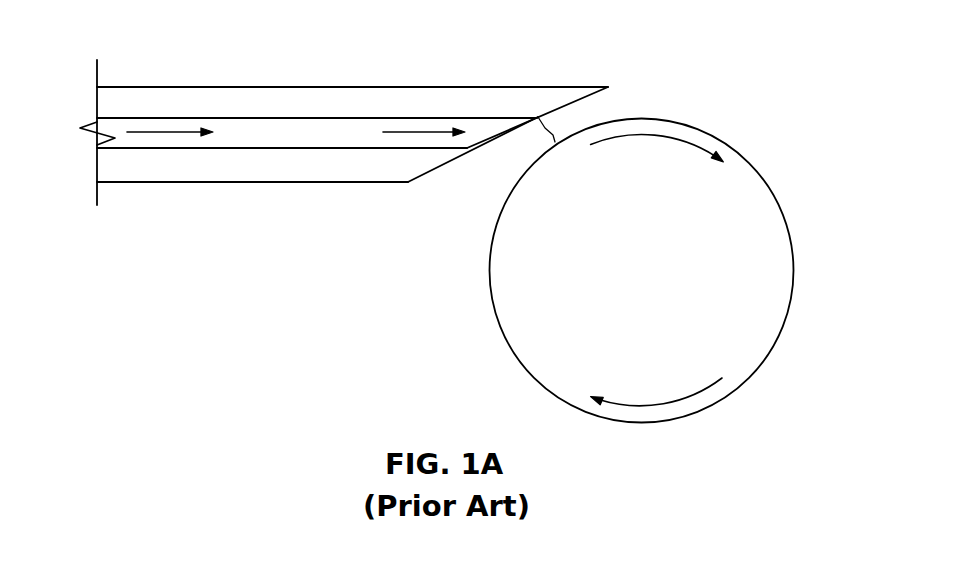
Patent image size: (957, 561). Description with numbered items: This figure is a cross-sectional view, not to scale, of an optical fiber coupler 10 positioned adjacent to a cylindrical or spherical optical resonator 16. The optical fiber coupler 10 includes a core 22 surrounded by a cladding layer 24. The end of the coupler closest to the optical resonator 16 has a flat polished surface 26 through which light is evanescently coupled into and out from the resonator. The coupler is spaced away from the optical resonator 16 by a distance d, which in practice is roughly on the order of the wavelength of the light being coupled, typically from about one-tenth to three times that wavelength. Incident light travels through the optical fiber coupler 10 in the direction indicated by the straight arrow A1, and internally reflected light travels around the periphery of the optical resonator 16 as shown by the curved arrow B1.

The optical fiber coupler 10 is at (355, 110).
The cladding layer 24 is at (259, 103).
The core 22 is at (323, 132).
The flat polished surface 26 is at (596, 75).
The optical resonator 16 is at (793, 270).
The straight arrow A1 is at (155, 133).
The curved arrow B1 is at (677, 138).
The distance d is at (554, 125).